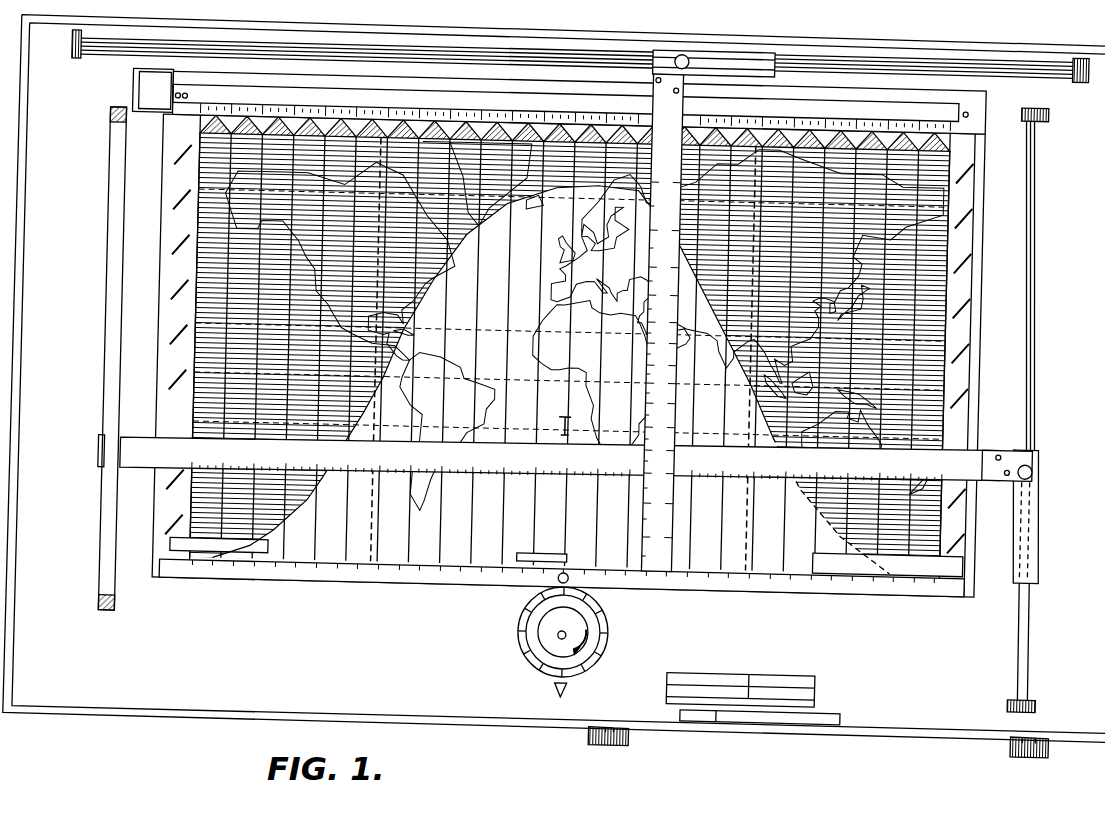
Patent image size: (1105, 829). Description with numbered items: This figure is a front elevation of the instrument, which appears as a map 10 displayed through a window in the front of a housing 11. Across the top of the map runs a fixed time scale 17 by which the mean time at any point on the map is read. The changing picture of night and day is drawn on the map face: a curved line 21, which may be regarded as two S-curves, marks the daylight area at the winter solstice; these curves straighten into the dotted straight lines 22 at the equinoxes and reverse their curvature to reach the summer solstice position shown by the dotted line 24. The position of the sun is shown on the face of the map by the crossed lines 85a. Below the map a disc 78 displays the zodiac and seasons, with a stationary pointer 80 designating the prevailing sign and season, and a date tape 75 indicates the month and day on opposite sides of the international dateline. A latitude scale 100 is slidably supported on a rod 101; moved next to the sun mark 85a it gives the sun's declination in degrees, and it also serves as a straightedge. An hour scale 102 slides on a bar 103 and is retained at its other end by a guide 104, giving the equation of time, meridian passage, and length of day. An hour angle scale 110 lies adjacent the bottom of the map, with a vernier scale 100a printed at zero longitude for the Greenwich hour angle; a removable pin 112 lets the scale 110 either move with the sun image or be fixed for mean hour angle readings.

The map 10 is at (568, 355).
The housing 11 is at (553, 387).
The time scale 17 is at (962, 90).
The curved line 21 is at (840, 510).
The straight lines 22 is at (384, 505).
The dotted line 24 is at (500, 537).
The date tape 75 is at (822, 672).
The disc 78 is at (563, 632).
The stationary pointer 80 is at (576, 683).
The crossed lines 85a is at (573, 412).
The latitude scale 100 is at (678, 510).
The vernier scale 100a is at (578, 536).
The rod 101 is at (996, 50).
The hour scale 102 is at (988, 436).
The bar 103 is at (1038, 369).
The guide 104 is at (110, 397).
The hour angle scale 110 is at (183, 576).
The pin 112 is at (579, 571).